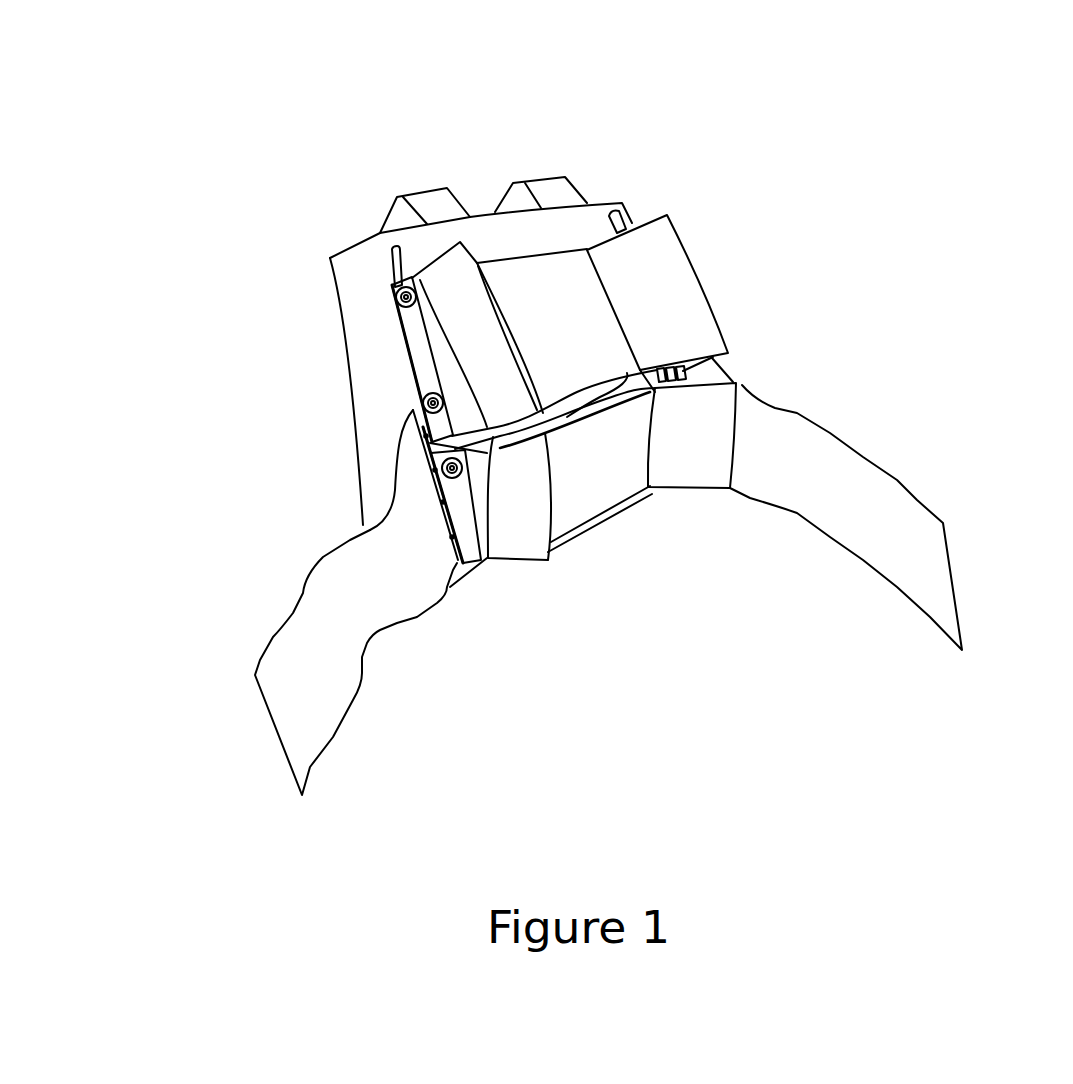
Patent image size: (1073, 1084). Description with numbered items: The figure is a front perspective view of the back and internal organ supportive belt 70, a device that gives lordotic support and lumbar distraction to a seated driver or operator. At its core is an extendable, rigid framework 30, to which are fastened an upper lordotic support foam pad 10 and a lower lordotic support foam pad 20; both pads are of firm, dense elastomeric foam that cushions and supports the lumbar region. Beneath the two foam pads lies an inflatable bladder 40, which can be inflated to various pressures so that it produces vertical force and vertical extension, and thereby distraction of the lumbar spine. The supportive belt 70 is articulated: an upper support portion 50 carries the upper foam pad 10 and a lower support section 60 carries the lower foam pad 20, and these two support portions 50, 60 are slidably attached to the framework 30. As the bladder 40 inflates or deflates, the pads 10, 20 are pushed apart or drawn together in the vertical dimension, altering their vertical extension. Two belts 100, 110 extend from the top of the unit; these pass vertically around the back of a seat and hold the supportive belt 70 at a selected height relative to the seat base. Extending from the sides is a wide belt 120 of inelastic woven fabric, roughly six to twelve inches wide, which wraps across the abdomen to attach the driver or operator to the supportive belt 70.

The upper lordotic support foam pad 10 is at (673, 243).
The lower lordotic support foam pad 20 is at (731, 393).
The extendable framework 30 is at (343, 263).
The inflatable bladder 40 is at (563, 407).
The upper support portion 50 is at (420, 360).
The lower support section 60 is at (487, 560).
The back and internal organ supportive belt 70 is at (895, 178).
The belt 100 is at (433, 200).
The belt 110 is at (555, 188).
The belt 120 is at (893, 490).